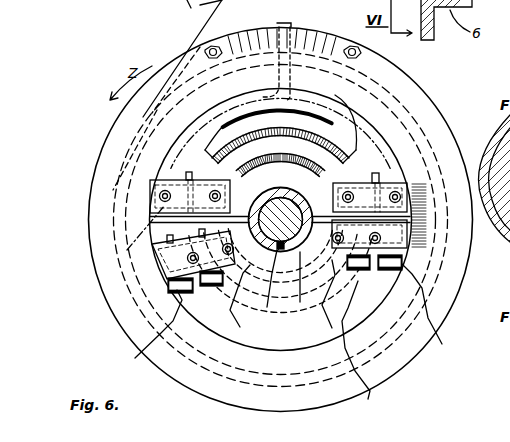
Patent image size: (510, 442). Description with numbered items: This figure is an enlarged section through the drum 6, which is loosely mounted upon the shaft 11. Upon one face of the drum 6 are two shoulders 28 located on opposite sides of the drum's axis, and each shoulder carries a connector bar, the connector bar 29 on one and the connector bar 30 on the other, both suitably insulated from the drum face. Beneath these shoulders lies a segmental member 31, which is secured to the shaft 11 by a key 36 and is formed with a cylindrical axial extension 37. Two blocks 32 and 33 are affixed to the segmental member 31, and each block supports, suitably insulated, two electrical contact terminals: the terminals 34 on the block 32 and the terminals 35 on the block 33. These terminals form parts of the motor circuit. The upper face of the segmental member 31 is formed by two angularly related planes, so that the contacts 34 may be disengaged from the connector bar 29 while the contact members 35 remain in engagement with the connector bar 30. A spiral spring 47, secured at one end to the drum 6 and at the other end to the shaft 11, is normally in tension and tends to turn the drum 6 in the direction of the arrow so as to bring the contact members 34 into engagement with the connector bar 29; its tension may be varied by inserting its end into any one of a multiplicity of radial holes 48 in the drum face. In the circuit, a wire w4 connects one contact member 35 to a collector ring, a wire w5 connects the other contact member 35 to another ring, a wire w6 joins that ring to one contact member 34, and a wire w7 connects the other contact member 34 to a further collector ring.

The drum 6 is at (427, 113).
The shaft 11 is at (300, 190).
The shoulders 28 is at (152, 226).
The connector bar 29 is at (162, 206).
The connector bar 30 is at (413, 200).
The segmental member 31 is at (359, 348).
The block 32 is at (160, 238).
The block 33 is at (422, 254).
The electrical contact terminals 34 is at (178, 280).
The electrical contact terminals 35 is at (352, 265).
The key 36 is at (268, 305).
The cylindrical axial extension 37 is at (300, 303).
The spiral spring 47 is at (318, 144).
The radial holes 48 is at (292, 26).
The wire w4 is at (432, 309).
The wire w5 is at (322, 300).
The wire w6 is at (234, 300).
The wire w7 is at (147, 331).